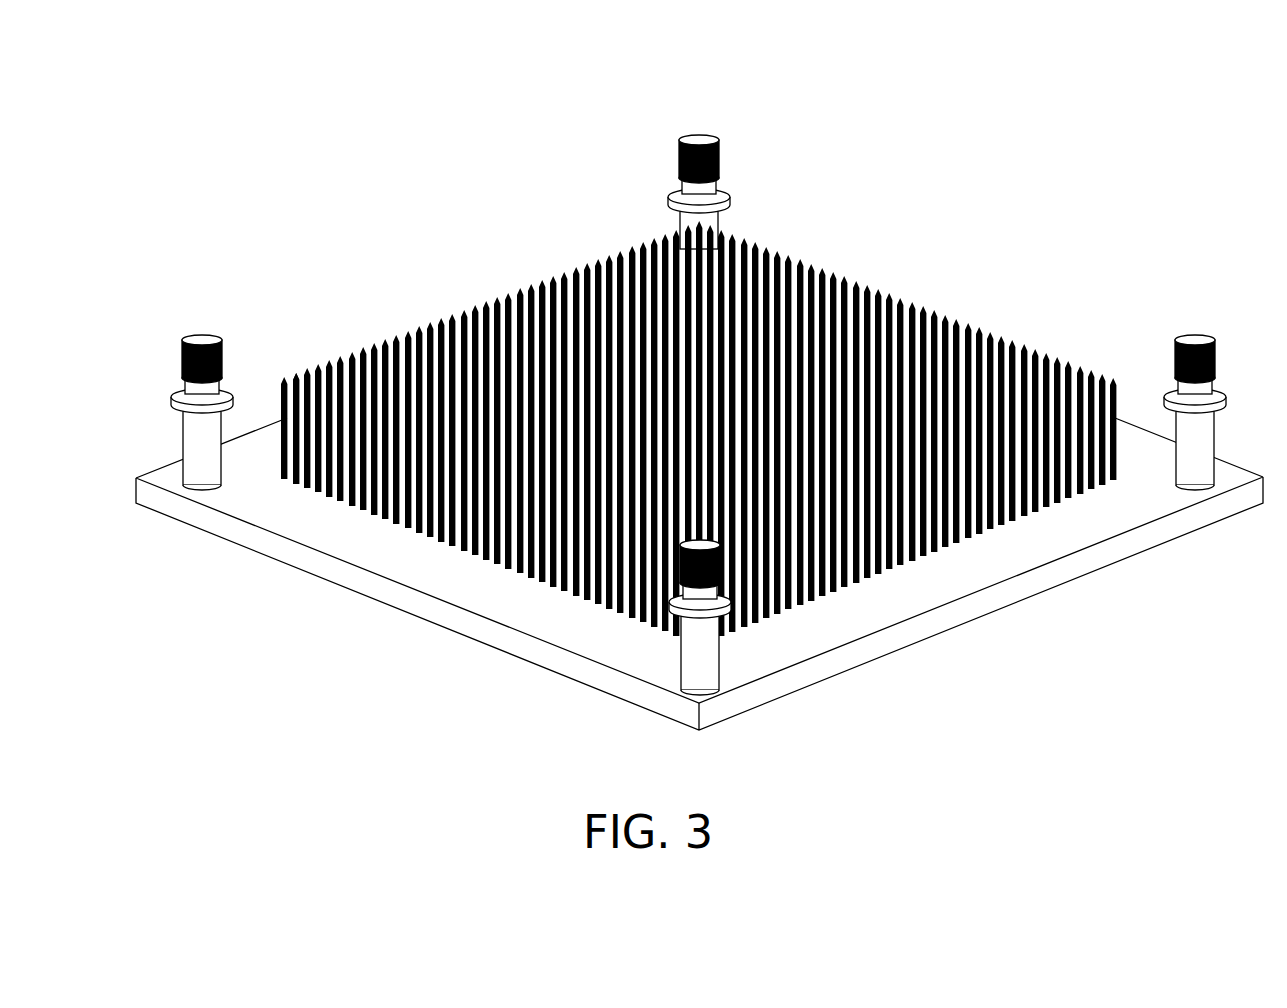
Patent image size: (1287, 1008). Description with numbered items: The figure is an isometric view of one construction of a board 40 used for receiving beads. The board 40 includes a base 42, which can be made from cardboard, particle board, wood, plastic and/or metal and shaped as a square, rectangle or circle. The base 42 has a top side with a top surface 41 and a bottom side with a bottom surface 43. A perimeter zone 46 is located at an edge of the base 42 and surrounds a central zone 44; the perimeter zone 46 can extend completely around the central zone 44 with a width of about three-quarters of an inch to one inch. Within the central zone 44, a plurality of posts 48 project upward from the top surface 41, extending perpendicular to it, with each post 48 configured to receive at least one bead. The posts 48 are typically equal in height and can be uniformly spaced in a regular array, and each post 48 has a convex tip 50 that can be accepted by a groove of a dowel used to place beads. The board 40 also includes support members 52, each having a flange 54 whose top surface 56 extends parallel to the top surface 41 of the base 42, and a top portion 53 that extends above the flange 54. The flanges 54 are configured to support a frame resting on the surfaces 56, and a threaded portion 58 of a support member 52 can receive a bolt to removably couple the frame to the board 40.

The board 40 is at (650, 398).
The top surface 41 is at (905, 598).
The base 42 is at (650, 575).
The bottom surface 43 is at (853, 672).
The central zone 44 is at (682, 433).
The perimeter zone 46 is at (655, 680).
The posts 48 is at (285, 420).
The convex tip 50 is at (291, 380).
The support members 52 is at (711, 156).
The top portions 53 is at (644, 180).
The flanges 54 is at (765, 198).
The top surface 56 is at (771, 184).
The threaded portion 58 is at (746, 123).